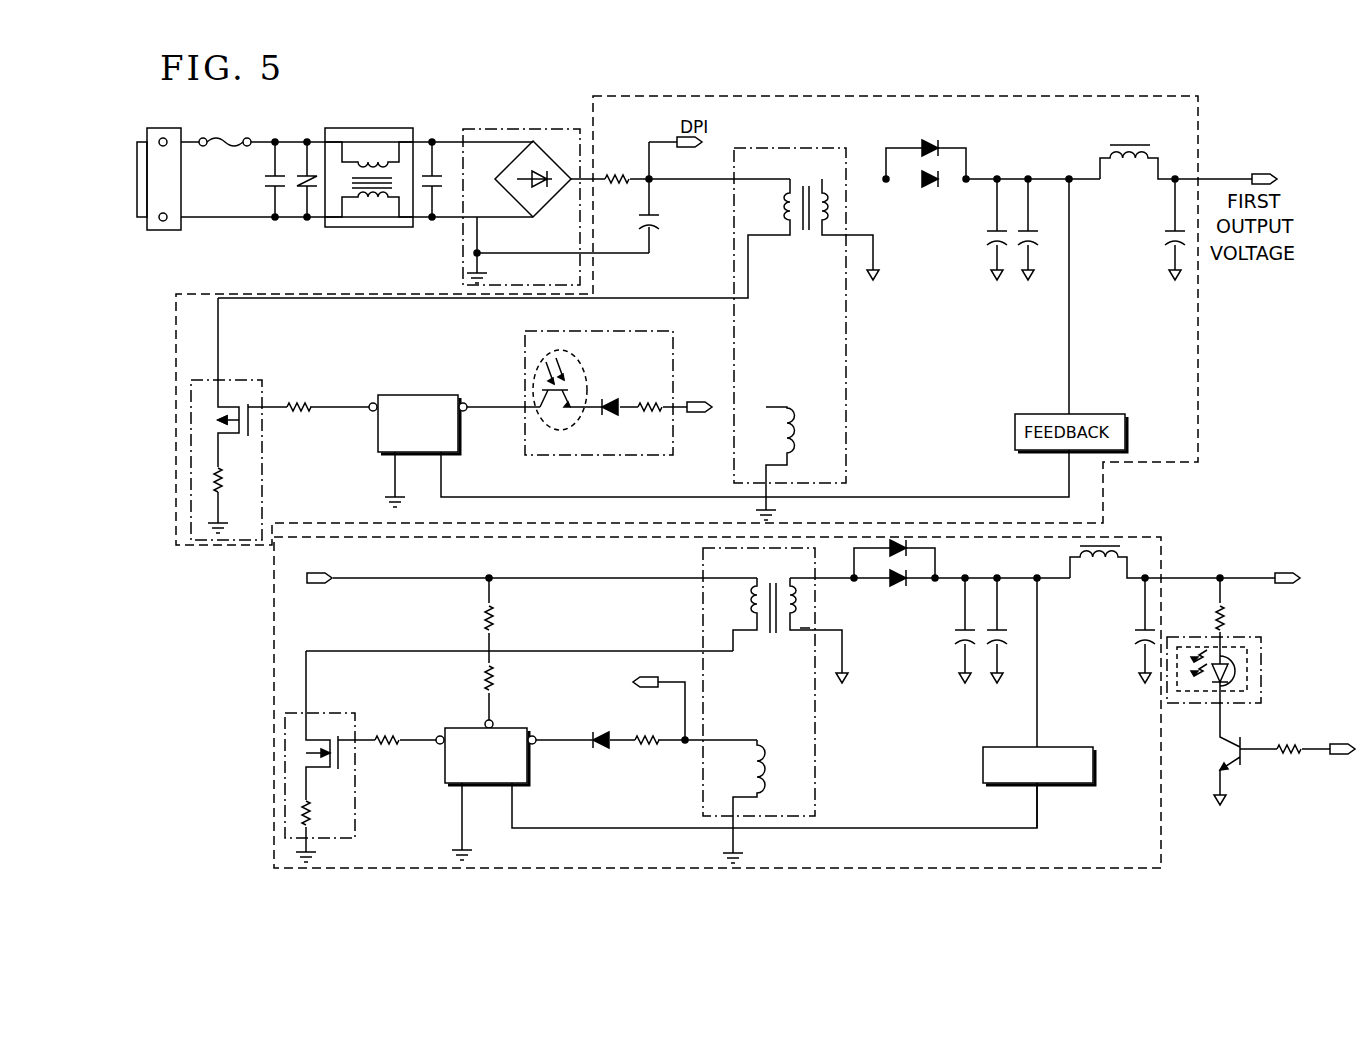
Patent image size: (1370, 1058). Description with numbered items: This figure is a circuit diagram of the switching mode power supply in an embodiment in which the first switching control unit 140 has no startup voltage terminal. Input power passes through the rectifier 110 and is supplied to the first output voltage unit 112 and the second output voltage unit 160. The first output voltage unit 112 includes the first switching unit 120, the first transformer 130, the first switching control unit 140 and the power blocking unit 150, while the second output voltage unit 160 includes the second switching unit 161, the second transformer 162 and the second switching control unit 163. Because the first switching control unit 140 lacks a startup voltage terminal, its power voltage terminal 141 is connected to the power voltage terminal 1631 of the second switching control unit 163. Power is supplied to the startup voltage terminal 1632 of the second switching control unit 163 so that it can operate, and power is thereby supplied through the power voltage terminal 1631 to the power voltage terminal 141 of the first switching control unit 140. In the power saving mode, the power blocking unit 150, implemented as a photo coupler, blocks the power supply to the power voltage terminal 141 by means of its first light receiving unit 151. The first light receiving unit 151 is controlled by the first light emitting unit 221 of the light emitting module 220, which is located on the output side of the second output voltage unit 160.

The rectifier 110 is at (503, 130).
The first output voltage unit 112 is at (1198, 113).
The first switching unit 120 is at (232, 380).
The first transformer 130 is at (820, 148).
The first switching control unit 140 is at (395, 434).
The power voltage terminal 141 is at (464, 401).
The power blocking unit 150 is at (623, 380).
The first light receiving unit 151 is at (580, 358).
The second output voltage unit 160 is at (1128, 535).
The second switching unit 161 is at (330, 713).
The second transformer 162 is at (815, 770).
The second switching control unit 163 is at (479, 719).
The power voltage terminal 1631 is at (534, 735).
The startup voltage terminal 1632 is at (483, 721).
The light emitting module 220 is at (1261, 691).
The first light emitting unit 221 is at (1233, 645).